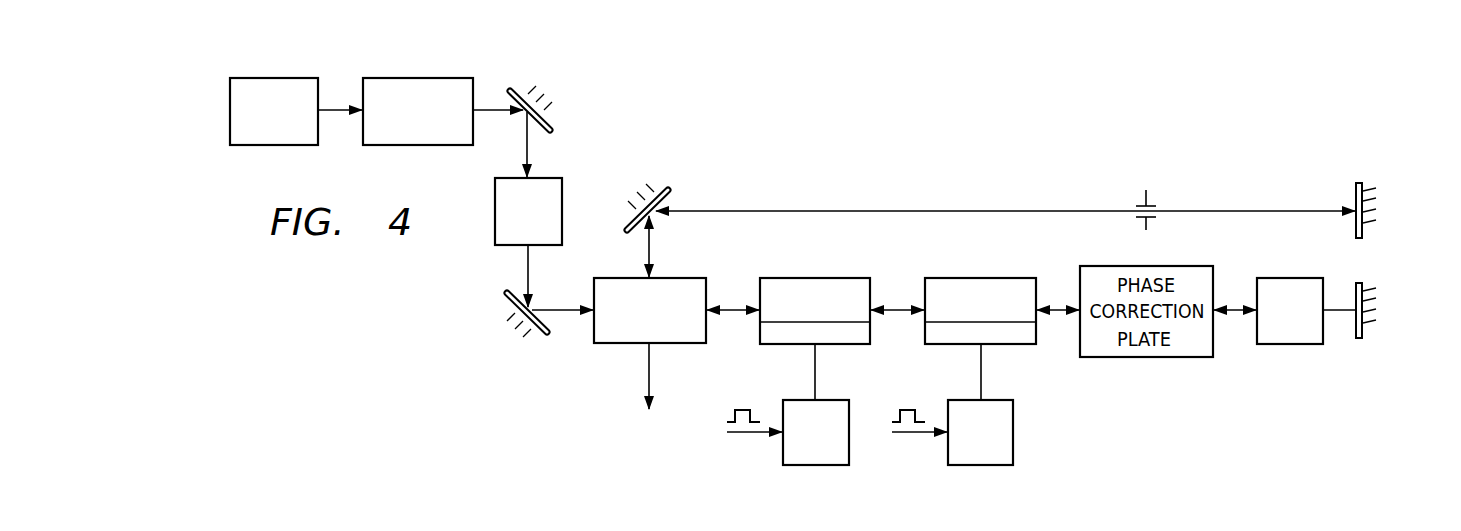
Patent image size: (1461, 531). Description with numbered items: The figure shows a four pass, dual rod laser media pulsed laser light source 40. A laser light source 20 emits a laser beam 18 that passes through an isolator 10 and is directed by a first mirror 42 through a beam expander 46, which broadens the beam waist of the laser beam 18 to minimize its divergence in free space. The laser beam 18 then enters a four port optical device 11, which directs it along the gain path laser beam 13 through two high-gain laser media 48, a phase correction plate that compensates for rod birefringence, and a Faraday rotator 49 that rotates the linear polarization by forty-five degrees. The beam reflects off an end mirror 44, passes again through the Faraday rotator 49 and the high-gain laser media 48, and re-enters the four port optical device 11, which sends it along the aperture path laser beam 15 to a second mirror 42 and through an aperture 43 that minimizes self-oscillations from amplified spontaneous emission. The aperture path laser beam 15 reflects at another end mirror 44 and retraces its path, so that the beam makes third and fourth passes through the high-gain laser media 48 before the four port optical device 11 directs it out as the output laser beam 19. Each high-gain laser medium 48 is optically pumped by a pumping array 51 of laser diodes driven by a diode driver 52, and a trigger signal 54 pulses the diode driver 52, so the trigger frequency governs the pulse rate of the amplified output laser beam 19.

The isolator 10 is at (413, 78).
The four port optical device 11 is at (627, 347).
The gain path laser beam 13 is at (735, 318).
The aperture path laser beam 15 is at (653, 242).
The laser beam 18 is at (487, 113).
The output laser beam 19 is at (653, 373).
The laser light source 20 is at (267, 78).
The pulsed laser light source 40 is at (940, 130).
The mirror 42 is at (536, 99).
The aperture 43 is at (1151, 202).
The end mirror 44 is at (1370, 207).
The beam expander 46 is at (493, 208).
The high-gain laser media 48 is at (815, 278).
The Faraday rotator 49 is at (1288, 347).
The pumping array 51 is at (792, 335).
The diode driver 52 is at (817, 467).
The trigger signal 54 is at (748, 435).